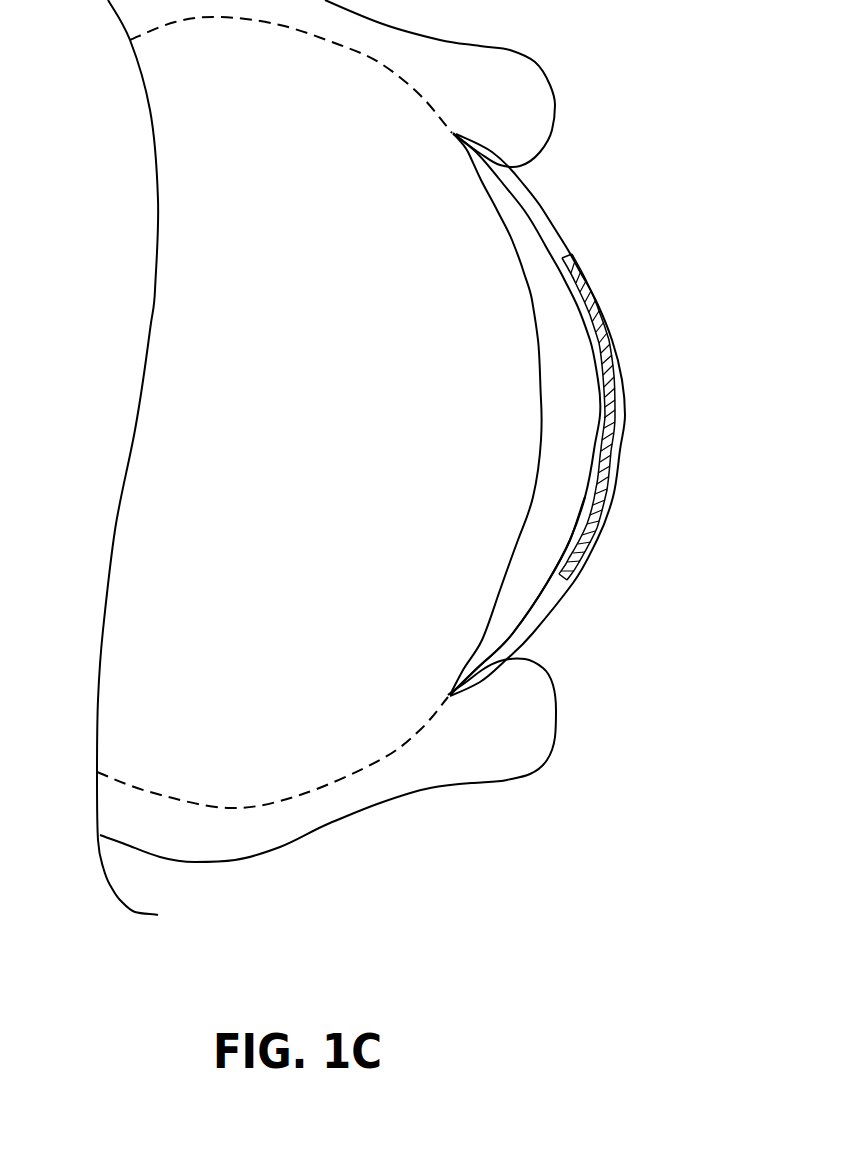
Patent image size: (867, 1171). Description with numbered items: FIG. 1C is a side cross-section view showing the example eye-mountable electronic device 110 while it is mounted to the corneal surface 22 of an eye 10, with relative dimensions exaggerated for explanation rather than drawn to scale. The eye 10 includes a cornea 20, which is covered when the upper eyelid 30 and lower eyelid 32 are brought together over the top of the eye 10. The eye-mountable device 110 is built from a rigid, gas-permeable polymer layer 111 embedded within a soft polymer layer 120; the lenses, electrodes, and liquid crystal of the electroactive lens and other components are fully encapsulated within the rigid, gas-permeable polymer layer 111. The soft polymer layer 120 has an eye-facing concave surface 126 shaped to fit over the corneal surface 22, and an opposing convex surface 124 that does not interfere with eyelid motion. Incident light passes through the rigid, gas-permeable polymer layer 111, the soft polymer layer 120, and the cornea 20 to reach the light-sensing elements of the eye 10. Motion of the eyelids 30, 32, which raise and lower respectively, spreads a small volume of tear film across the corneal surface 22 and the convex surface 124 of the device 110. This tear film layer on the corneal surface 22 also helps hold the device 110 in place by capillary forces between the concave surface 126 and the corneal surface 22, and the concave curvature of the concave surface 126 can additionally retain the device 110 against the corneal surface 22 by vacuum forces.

The eye 10 is at (404, 824).
The cornea 20 is at (565, 463).
The corneal surface 22 is at (592, 503).
The upper eyelid 30 is at (554, 87).
The lower eyelid 32 is at (555, 700).
The eye-mountable electronic device 110 is at (603, 415).
The rigid, gas-permeable polymer layer 111 is at (592, 320).
The soft polymer layer 120 is at (649, 398).
The convex surface 124 is at (619, 334).
The concave surface 126 is at (592, 382).